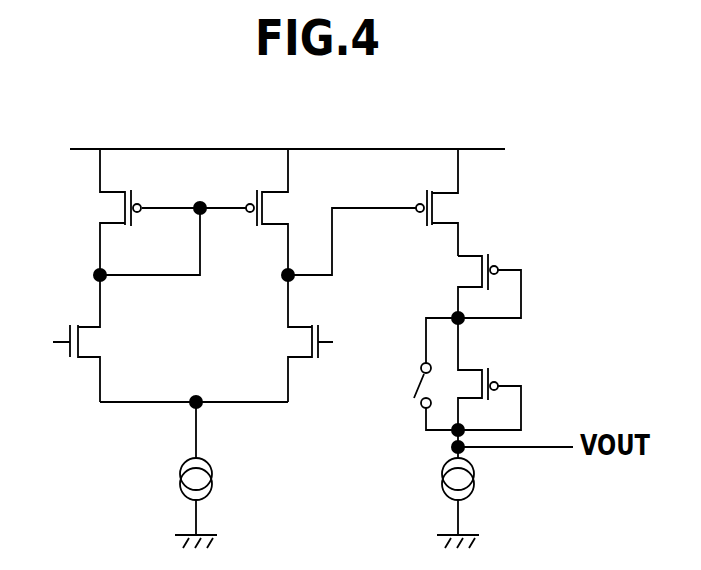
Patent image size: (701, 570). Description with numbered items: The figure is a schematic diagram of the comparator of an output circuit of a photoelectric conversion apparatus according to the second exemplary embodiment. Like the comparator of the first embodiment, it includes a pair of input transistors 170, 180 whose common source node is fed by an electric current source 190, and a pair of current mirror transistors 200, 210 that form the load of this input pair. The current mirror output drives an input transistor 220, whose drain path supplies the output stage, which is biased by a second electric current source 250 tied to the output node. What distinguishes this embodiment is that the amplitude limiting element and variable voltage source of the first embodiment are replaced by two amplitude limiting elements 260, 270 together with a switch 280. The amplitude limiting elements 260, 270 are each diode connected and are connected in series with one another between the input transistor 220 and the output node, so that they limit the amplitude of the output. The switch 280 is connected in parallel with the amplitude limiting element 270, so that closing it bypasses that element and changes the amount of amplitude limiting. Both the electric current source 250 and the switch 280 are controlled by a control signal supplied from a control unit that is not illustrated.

The input transistor 170 is at (73, 362).
The input transistor 180 is at (313, 325).
The electric current source 190 is at (180, 490).
The current mirror transistor 200 is at (100, 207).
The current mirror transistor 210 is at (283, 208).
The input transistor 220 is at (458, 208).
The electric current source 250 is at (440, 490).
The amplitude limiting element 260 is at (485, 253).
The amplitude limiting element 270 is at (487, 370).
The switch 280 is at (413, 384).